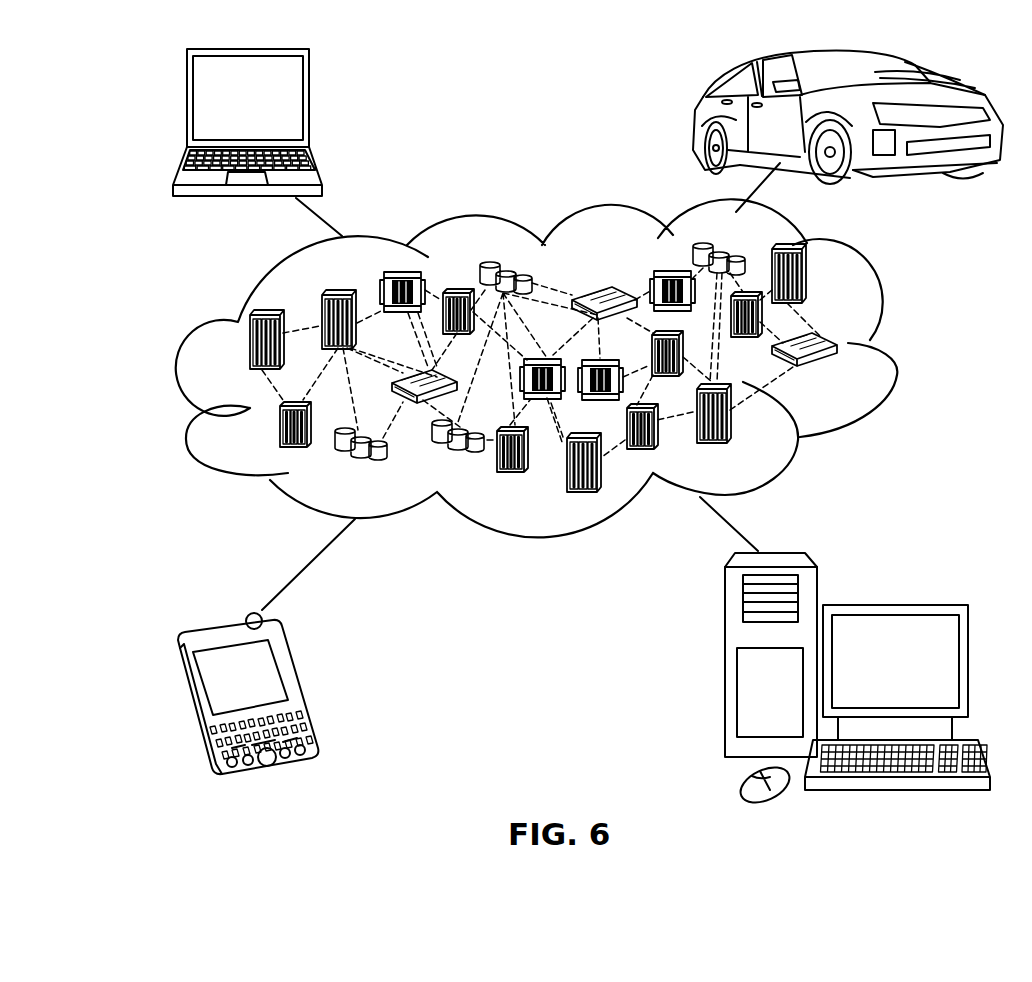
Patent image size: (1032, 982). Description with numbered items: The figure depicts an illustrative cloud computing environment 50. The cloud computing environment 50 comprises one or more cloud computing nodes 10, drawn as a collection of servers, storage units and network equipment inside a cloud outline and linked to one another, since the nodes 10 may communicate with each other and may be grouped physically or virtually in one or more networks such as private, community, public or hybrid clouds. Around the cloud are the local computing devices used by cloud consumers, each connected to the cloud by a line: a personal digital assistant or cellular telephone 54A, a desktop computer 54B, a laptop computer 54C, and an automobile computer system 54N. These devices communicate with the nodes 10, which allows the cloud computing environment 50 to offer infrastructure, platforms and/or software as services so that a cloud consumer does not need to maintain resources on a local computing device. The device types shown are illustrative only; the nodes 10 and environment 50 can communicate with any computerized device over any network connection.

The cloud computing node 10 is at (848, 378).
The cloud computing environment 50 is at (897, 352).
The personal digital assistant or cellular telephone 54A is at (300, 690).
The desktop computer 54B is at (895, 605).
The laptop computer 54C is at (309, 104).
The automobile computer system 54N is at (700, 122).